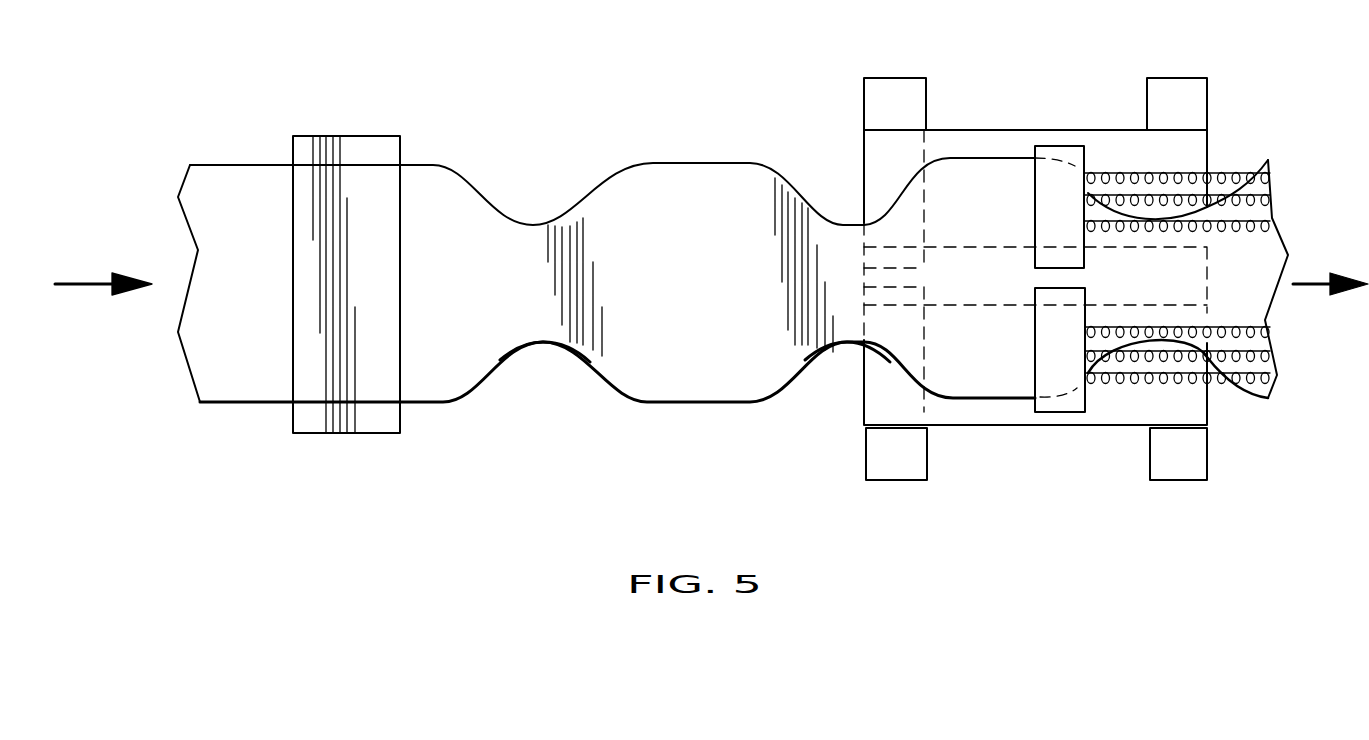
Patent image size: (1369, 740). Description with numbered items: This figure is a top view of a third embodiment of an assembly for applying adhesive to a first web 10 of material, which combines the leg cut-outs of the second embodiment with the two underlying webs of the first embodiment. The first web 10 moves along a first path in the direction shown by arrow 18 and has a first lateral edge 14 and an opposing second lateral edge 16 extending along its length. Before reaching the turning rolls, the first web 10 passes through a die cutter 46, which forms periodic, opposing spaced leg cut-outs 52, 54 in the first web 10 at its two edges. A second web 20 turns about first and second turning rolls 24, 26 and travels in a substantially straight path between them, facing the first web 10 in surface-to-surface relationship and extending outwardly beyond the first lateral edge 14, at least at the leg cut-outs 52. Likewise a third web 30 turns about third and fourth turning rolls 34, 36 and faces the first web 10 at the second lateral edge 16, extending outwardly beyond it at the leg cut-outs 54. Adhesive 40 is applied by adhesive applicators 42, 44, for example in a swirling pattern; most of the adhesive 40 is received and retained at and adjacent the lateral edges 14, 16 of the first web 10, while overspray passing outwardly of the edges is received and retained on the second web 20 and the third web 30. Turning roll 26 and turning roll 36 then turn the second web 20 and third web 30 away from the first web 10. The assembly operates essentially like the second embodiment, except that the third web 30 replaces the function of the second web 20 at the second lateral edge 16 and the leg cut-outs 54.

The first web 10 is at (240, 165).
The first lateral edge 14 is at (434, 164).
The second lateral edge 16 is at (443, 404).
The arrow 18 is at (90, 282).
The second web 20 is at (1040, 130).
The first turning roll 24 is at (893, 78).
The second turning roll 26 is at (1175, 78).
The third web 30 is at (1050, 428).
The third turning roll 34 is at (897, 480).
The fourth turning roll 36 is at (1177, 480).
The adhesive 40 is at (1170, 222).
The adhesive applicator 42 is at (1035, 207).
The adhesive applicator 44 is at (1035, 343).
The die cutter 46 is at (357, 136).
The leg cut-out 52 is at (534, 224).
The leg cut-out 54 is at (535, 345).